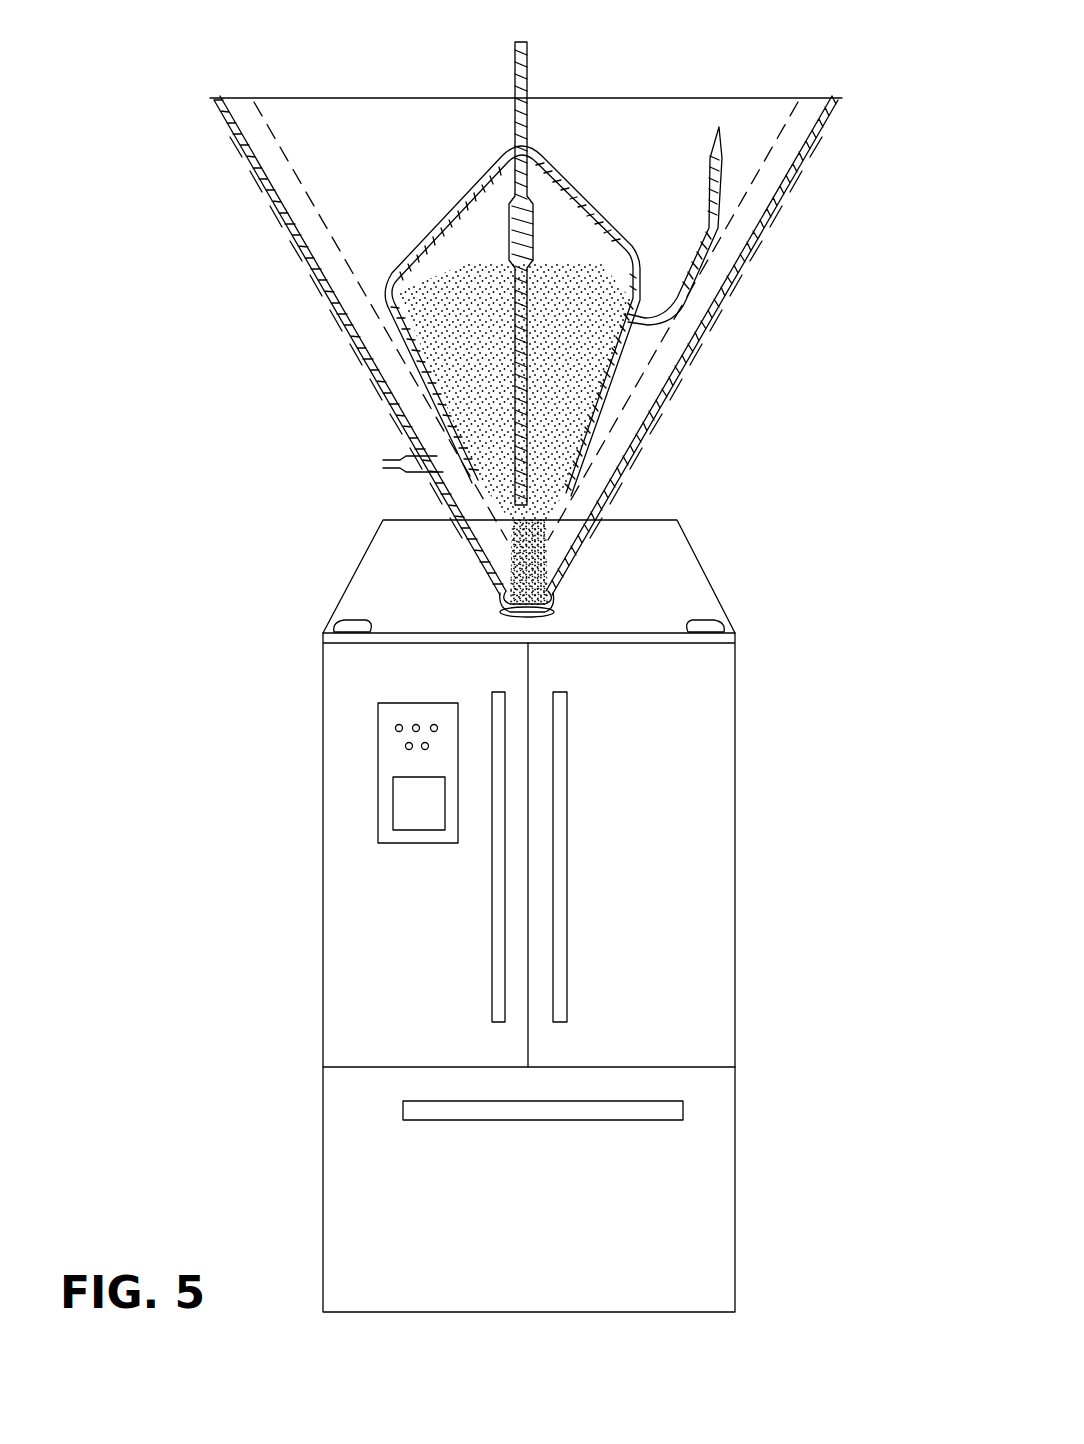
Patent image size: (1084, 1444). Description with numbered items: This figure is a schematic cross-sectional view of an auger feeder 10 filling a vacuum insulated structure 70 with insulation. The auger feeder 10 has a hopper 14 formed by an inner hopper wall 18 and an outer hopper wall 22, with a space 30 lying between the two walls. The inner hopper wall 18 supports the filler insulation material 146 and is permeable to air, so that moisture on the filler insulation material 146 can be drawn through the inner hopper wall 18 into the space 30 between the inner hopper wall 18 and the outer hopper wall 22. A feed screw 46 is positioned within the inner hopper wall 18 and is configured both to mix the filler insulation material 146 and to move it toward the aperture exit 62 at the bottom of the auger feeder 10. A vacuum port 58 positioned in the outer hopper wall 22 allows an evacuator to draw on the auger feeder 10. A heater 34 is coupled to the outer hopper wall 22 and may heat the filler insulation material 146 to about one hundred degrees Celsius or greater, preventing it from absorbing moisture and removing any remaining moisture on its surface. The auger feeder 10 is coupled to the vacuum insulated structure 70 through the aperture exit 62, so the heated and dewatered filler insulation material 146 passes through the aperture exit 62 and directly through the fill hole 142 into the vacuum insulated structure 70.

The auger feeder 10 is at (579, 297).
The hopper 14 is at (614, 80).
The inner hopper wall 18 is at (786, 126).
The outer hopper wall 22 is at (793, 190).
The space 30 is at (684, 306).
The heater 34 is at (663, 405).
The feed screw 46 is at (518, 112).
The vacuum port 58 is at (383, 460).
The aperture exit 62 is at (538, 616).
The vacuum insulated structure 70 is at (742, 772).
The fill hole 142 is at (523, 613).
The filler insulation material 146 is at (448, 294).